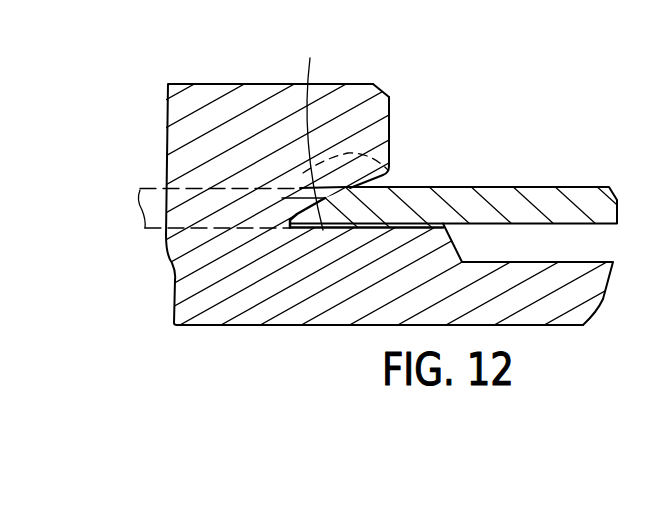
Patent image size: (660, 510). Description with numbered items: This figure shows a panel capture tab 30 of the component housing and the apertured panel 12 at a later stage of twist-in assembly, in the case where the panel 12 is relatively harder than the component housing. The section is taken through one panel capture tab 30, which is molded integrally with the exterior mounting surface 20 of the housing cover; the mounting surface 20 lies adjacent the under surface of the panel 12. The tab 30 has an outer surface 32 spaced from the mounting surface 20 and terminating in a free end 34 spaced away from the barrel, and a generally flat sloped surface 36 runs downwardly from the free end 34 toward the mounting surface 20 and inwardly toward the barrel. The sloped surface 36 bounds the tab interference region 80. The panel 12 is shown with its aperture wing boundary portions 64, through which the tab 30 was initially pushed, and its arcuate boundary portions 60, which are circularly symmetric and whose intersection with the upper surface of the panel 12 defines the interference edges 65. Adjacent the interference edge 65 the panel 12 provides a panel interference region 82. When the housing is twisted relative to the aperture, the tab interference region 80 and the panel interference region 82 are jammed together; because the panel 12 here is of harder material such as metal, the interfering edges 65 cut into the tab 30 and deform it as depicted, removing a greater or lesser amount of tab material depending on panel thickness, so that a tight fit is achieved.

The panel 12 is at (523, 178).
The exterior mounting surface 20 is at (545, 262).
The panel capture tab 30 is at (393, 88).
The outer surface 32 is at (235, 84).
The free end 34 is at (390, 112).
The sloped surface 36 is at (383, 176).
The arcuate boundary portions 60 is at (318, 214).
The aperture wing boundary portions 64 is at (155, 208).
The interference edges 65 is at (312, 132).
The tab interference region 80 is at (388, 158).
The panel interference region 82 is at (162, 226).